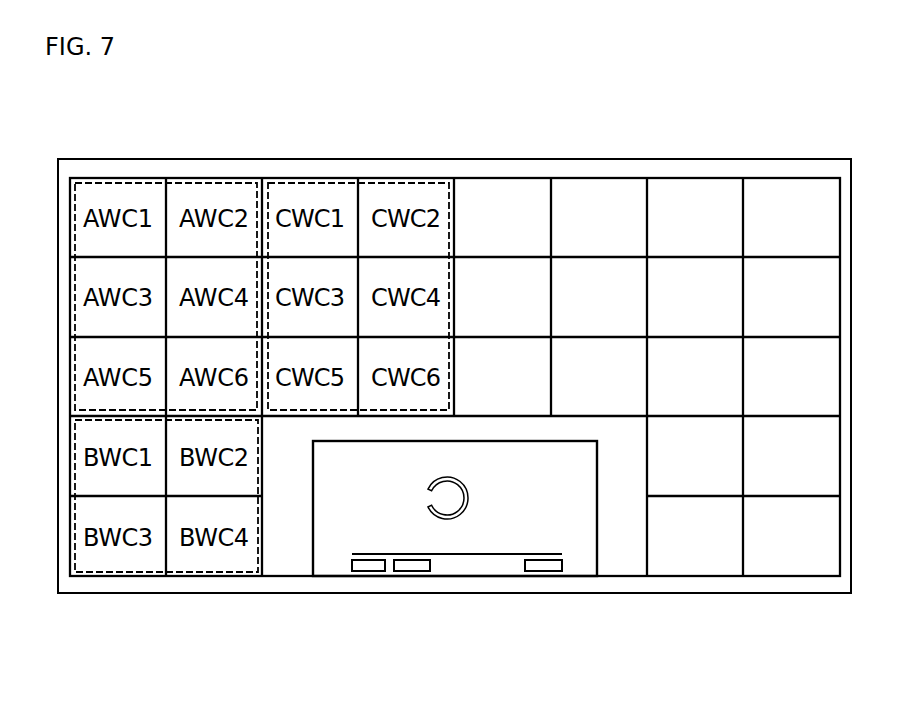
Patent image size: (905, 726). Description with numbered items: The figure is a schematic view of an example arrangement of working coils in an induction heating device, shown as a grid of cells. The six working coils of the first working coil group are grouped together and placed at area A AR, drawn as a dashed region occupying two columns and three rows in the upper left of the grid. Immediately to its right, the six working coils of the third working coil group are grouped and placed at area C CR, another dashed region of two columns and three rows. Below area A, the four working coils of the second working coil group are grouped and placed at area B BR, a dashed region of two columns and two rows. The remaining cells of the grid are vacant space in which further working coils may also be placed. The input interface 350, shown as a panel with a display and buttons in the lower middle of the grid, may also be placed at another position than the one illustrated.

The area A AR is at (190, 183).
The area C CR is at (382, 183).
The area B BR is at (187, 572).
The input interface 350 is at (463, 545).